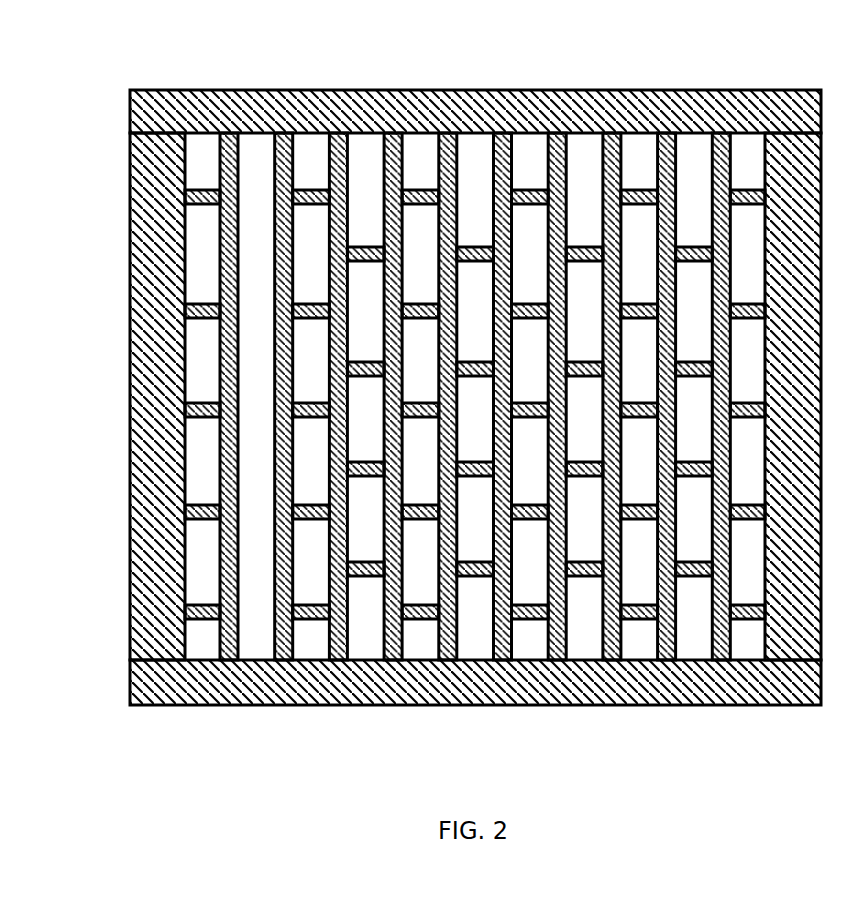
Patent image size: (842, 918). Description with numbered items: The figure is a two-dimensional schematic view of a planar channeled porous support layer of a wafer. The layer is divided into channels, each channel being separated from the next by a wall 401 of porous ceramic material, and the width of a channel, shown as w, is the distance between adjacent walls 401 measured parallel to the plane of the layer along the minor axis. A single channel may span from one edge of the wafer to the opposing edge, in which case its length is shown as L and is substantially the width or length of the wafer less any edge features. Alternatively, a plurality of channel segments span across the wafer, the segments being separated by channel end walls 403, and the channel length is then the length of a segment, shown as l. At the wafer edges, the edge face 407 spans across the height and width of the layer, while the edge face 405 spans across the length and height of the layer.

The wall 401 is at (221, 489).
The channel end wall 403 is at (207, 188).
The edge face 405 is at (160, 302).
The edge face 407 is at (415, 690).
The channel length L is at (259, 659).
The channel width w is at (220, 262).
The channel segment length l is at (203, 319).